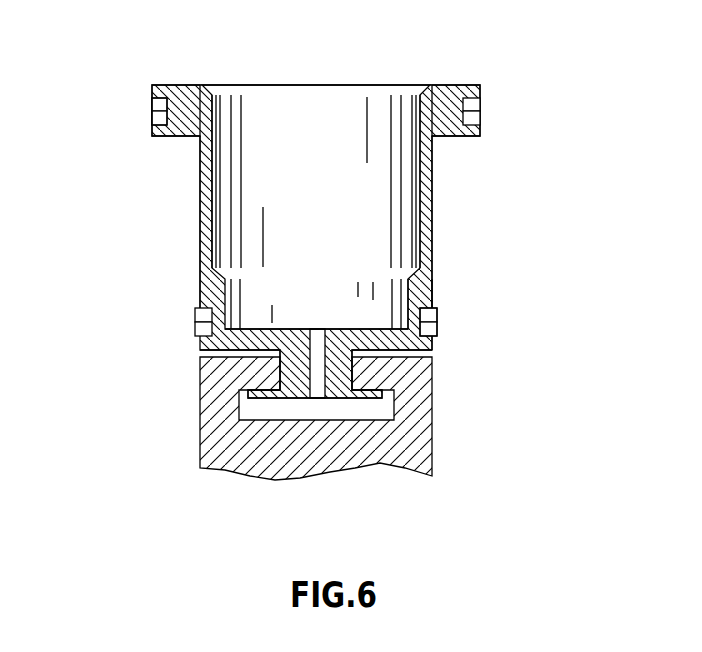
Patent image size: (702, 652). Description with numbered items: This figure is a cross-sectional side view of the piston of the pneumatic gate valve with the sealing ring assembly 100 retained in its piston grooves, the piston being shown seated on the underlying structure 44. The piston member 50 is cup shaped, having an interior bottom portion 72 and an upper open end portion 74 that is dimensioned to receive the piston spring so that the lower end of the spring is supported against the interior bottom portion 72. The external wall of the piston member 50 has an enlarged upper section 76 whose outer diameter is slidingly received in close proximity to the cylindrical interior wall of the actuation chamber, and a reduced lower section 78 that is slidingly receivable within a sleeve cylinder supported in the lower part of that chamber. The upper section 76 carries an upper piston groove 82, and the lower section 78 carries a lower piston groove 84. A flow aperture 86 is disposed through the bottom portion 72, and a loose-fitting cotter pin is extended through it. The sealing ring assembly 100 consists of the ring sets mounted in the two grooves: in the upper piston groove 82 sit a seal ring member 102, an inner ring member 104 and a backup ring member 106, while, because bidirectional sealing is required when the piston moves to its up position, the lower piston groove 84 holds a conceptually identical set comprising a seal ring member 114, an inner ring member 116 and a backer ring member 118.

The T-slot table base 44 is at (250, 436).
The piston member 50 is at (313, 82).
The interior bottom portion 72 is at (267, 328).
The upper open end portion 74 is at (214, 164).
The enlarged upper section 76 is at (151, 88).
The reduced lower section 78 is at (199, 232).
The upper piston groove 82 is at (482, 98).
The lower piston groove 84 is at (440, 338).
The flow aperture 86 is at (316, 328).
The sealing ring assembly 100 is at (483, 112).
The seal ring member 102 is at (151, 114).
The inner ring member 104 is at (165, 130).
The backup ring member 106 is at (151, 100).
The seal ring member 114 is at (438, 316).
The inner ring member 116 is at (429, 308).
The backer ring member 118 is at (438, 330).